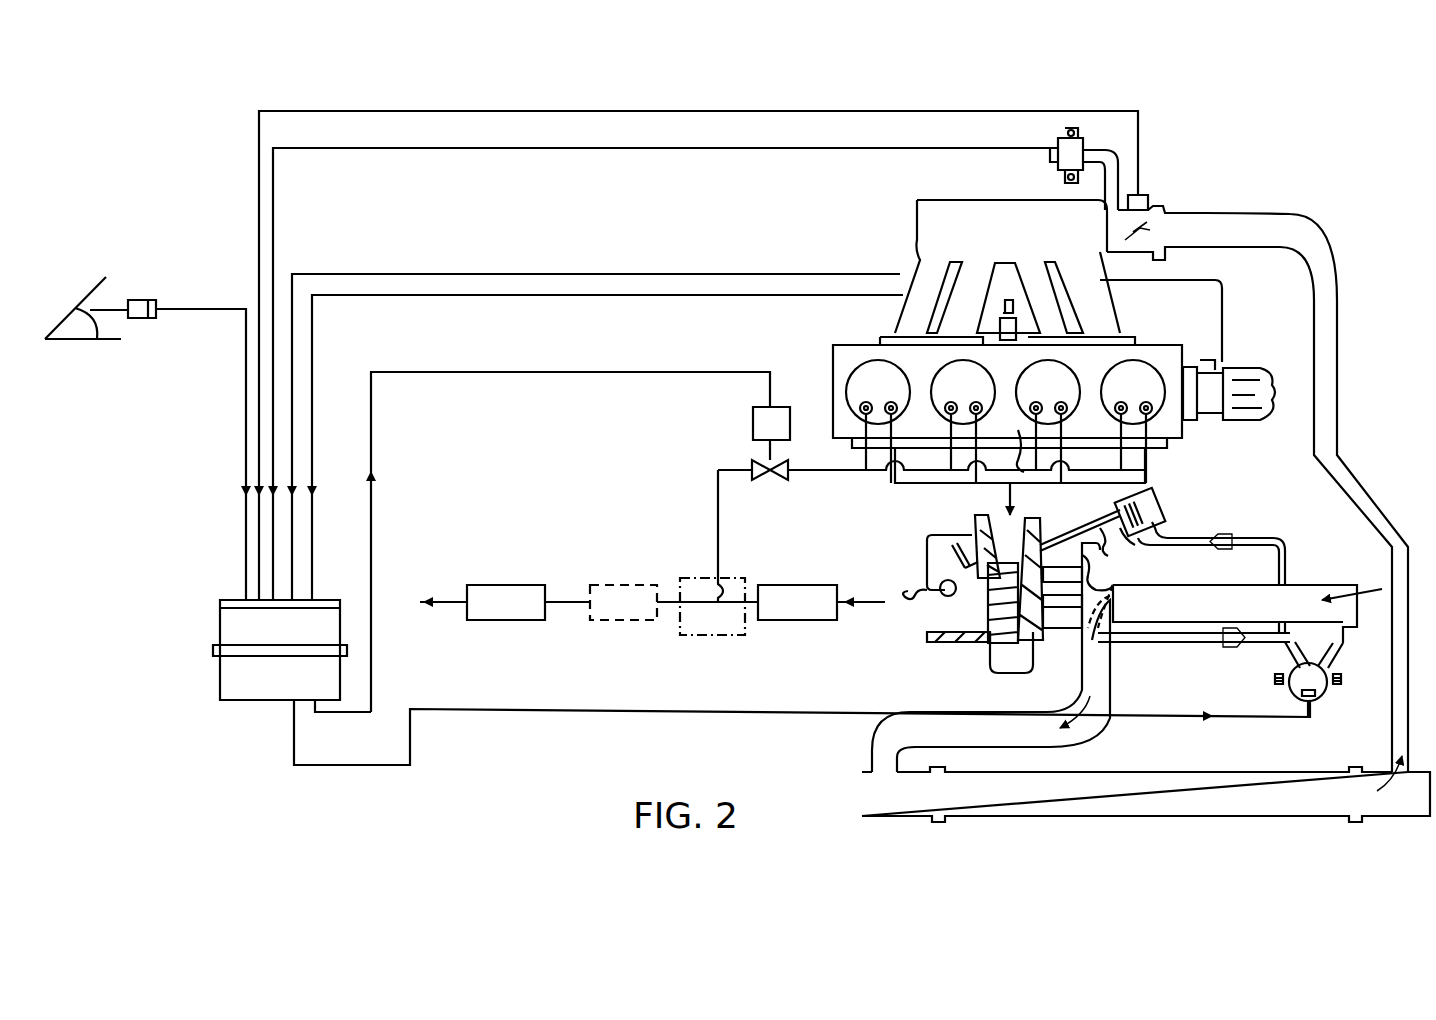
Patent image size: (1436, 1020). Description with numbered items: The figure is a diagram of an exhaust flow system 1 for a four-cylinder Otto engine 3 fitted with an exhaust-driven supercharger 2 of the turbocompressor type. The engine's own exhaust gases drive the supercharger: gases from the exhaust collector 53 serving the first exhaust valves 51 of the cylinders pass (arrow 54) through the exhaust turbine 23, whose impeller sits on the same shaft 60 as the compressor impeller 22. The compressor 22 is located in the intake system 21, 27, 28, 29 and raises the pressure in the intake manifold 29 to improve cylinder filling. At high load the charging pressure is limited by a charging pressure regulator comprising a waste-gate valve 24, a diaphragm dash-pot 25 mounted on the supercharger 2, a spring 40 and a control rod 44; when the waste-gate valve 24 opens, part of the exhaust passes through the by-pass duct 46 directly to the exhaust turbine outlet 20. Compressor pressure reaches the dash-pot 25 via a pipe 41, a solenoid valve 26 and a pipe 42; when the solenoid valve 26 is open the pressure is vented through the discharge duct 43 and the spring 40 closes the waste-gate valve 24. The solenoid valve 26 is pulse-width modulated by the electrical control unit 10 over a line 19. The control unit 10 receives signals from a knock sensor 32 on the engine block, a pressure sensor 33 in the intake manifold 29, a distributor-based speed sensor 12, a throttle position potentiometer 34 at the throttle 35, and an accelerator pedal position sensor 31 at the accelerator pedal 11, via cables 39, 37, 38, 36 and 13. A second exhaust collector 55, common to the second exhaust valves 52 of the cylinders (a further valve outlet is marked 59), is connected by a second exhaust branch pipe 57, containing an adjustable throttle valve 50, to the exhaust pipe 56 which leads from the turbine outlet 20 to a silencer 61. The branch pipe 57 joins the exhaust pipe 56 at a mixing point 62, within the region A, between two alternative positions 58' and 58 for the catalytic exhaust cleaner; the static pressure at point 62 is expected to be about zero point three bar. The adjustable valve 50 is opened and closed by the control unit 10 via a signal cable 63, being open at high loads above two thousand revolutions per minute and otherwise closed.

The internal combustion engine system 1 is at (1292, 211).
The supercharger 2 is at (1055, 630).
The Otto engine 3 is at (1205, 432).
The electrical control unit 10 is at (221, 668).
The accelerator pedal 11 is at (78, 339).
The distributor-based speed sensor 12 is at (140, 318).
The cable 13 is at (183, 310).
The signal line to lambda sensor 19 is at (343, 765).
The exhaust turbine outlet 20 is at (903, 594).
The intake system pipe 21 is at (1350, 617).
The compressor impeller 22 is at (1120, 598).
The exhaust turbine 23 is at (980, 650).
The waste-gate valve 24 is at (926, 566).
The diaphragm dash-pot 25 is at (1158, 506).
The solenoid valve 26 is at (1325, 694).
The intake system pipe 27 is at (1140, 782).
The intake pipe 28 is at (1338, 354).
The intake manifold 29 is at (962, 200).
The accelerator pedal position sensor 31 is at (1233, 368).
The knock sensor 32 is at (1014, 312).
The pressure sensor 33 is at (1050, 156).
The throttle position potentiometer 34 is at (1150, 198).
The throttle valve 35 is at (1124, 234).
The cable 36 is at (258, 130).
The cable 37 is at (372, 150).
The cable 38 is at (790, 273).
The cable 39 is at (784, 300).
The spring 40 is at (1115, 512).
The pipe 41 is at (1165, 648).
The pipe 42 is at (1287, 545).
The discharge duct 43 is at (1340, 660).
The control rod 44 is at (1120, 547).
The by-pass duct 46 is at (972, 538).
The adjustable throttle valve 50 is at (753, 480).
The first exhaust valves 51 is at (1155, 369).
The second exhaust valves 52 is at (1002, 398).
The exhaust collector 53 is at (903, 490).
The fuel return line 54 is at (1018, 464).
The second exhaust collector 55 is at (1010, 444).
The exhaust pipe 56 is at (562, 606).
The second exhaust branch pipe 57 is at (718, 468).
The catalytic exhaust cleaner 58 is at (623, 621).
The catalytic exhaust cleaner 58' is at (797, 619).
The injector connection 59 is at (1093, 423).
The shaft 60 is at (1068, 583).
The silencer 61 is at (510, 622).
The mixing point 62 is at (753, 418).
The signal cable 63 is at (604, 372).
The fuel metering unit A is at (727, 639).